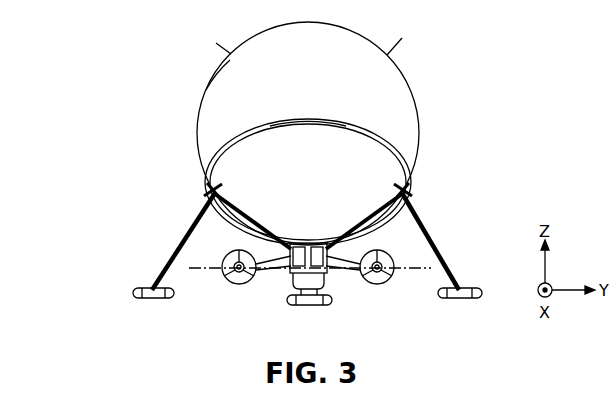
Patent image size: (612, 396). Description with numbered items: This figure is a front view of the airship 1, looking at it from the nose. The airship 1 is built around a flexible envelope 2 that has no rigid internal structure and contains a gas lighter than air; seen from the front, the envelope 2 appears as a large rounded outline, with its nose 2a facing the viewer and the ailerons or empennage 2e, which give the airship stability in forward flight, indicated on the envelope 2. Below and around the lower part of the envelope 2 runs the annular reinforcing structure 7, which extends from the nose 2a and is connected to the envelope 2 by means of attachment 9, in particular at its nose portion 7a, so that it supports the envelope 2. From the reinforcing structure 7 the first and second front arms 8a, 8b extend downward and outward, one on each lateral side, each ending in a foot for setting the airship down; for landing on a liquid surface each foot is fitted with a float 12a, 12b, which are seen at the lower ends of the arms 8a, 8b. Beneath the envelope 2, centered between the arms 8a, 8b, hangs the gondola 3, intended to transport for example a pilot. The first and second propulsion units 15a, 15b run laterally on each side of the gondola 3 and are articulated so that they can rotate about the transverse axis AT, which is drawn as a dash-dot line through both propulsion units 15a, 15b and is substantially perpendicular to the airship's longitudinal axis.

The airship 1 is at (104, 50).
The flexible envelope 2 is at (387, 85).
The nose 2a is at (241, 106).
The ailerons or empennage 2e is at (223, 46).
The reinforcing structure 7 is at (399, 152).
The nose portion of the reinforcing structure 7a is at (310, 120).
The means of attachment 9 is at (208, 186).
The first front arm 8a is at (437, 243).
The second front arm 8b is at (183, 243).
The float 12a is at (467, 299).
The float 12b is at (152, 300).
The first propulsion unit 15a is at (382, 282).
The second propulsion unit 15b is at (238, 282).
The gondola 3 is at (308, 280).
The transverse axis AT is at (206, 271).